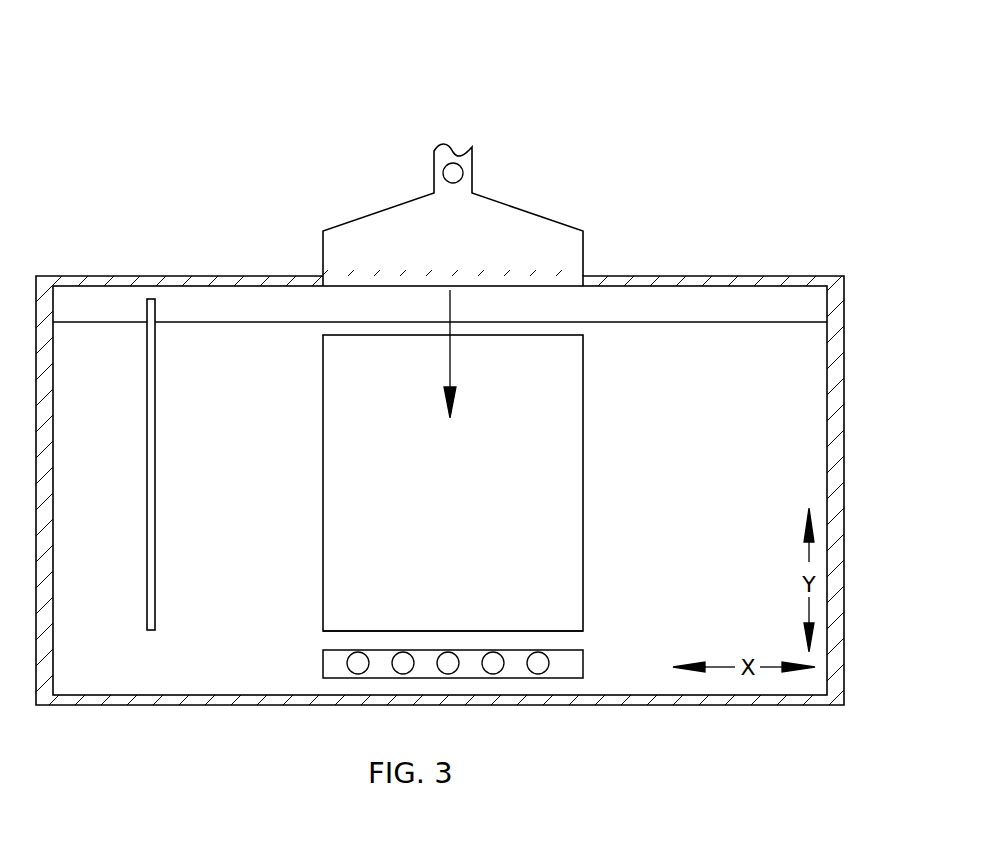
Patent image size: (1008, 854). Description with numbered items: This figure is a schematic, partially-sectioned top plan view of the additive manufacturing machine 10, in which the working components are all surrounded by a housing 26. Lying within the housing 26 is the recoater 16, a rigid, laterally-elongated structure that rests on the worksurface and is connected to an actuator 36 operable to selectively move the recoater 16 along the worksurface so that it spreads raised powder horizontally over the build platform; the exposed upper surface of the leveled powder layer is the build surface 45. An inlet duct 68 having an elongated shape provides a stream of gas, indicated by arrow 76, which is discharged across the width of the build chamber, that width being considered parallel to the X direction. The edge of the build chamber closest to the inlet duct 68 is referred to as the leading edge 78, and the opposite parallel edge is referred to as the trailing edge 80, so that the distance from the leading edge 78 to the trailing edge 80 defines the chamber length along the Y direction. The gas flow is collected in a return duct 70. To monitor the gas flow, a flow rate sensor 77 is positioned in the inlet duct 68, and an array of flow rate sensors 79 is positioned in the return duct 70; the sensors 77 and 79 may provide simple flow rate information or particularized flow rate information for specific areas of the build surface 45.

The additive manufacturing system 10 is at (596, 44).
The recoater 16 is at (150, 435).
The housing 26 is at (835, 334).
The actuator 36 is at (103, 317).
The build surface 45 is at (568, 619).
The inlet duct 68 is at (502, 213).
The return duct 70 is at (328, 667).
The arrow 76 is at (451, 371).
The flow rate sensor 77 is at (441, 173).
The leading edge 78 is at (563, 336).
The flow rate sensors 79 is at (493, 674).
The trailing edge 80 is at (567, 631).